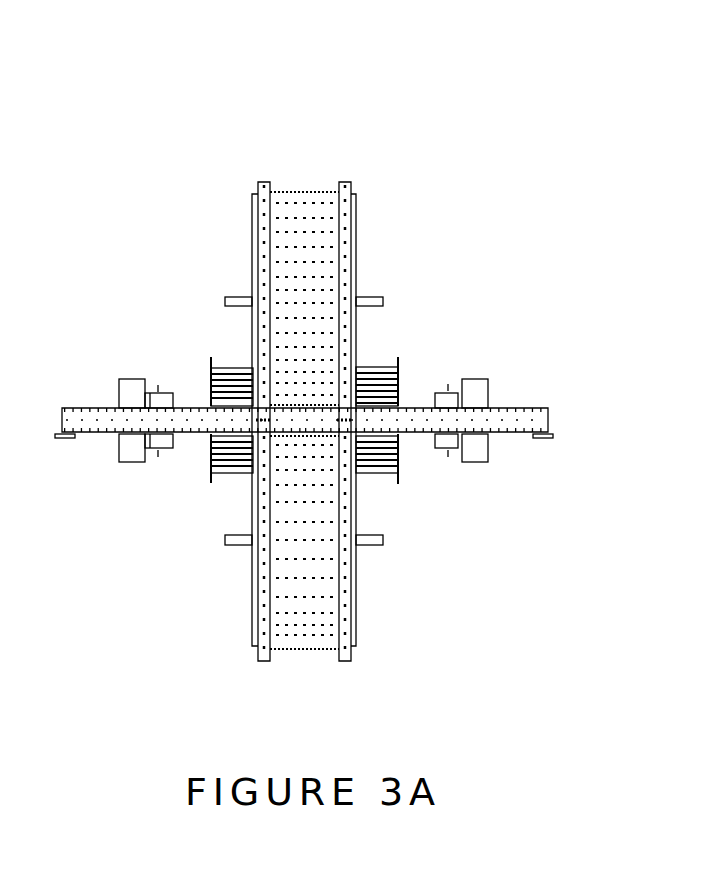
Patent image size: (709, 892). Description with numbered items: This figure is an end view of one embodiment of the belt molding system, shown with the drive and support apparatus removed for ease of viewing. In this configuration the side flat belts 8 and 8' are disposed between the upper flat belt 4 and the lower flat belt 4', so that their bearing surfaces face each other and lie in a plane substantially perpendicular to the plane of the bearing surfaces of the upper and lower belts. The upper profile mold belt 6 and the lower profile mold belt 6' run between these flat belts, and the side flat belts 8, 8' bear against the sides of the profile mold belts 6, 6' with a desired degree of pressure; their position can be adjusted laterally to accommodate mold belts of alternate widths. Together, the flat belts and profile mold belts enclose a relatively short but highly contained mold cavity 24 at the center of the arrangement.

The upper flat belt 4 is at (399, 289).
The lower flat belt 4' is at (401, 509).
The upper profile mold belt 6 is at (280, 258).
The lower profile mold belt 6' is at (336, 573).
The side belt 8 is at (163, 393).
The side belt 8' is at (487, 413).
The mold cavity 24 is at (303, 420).